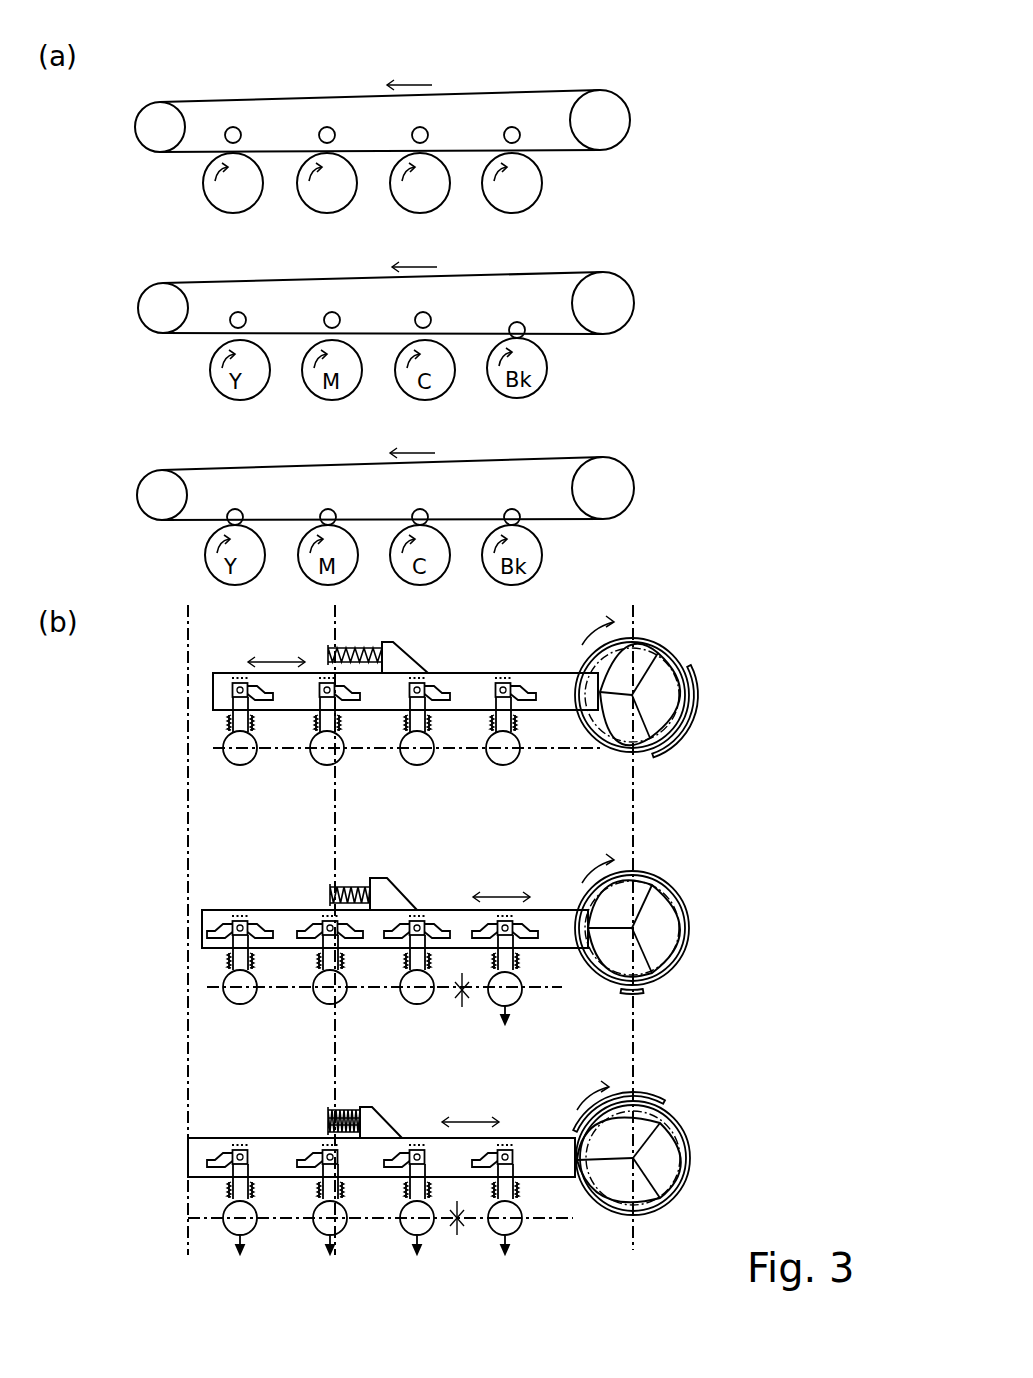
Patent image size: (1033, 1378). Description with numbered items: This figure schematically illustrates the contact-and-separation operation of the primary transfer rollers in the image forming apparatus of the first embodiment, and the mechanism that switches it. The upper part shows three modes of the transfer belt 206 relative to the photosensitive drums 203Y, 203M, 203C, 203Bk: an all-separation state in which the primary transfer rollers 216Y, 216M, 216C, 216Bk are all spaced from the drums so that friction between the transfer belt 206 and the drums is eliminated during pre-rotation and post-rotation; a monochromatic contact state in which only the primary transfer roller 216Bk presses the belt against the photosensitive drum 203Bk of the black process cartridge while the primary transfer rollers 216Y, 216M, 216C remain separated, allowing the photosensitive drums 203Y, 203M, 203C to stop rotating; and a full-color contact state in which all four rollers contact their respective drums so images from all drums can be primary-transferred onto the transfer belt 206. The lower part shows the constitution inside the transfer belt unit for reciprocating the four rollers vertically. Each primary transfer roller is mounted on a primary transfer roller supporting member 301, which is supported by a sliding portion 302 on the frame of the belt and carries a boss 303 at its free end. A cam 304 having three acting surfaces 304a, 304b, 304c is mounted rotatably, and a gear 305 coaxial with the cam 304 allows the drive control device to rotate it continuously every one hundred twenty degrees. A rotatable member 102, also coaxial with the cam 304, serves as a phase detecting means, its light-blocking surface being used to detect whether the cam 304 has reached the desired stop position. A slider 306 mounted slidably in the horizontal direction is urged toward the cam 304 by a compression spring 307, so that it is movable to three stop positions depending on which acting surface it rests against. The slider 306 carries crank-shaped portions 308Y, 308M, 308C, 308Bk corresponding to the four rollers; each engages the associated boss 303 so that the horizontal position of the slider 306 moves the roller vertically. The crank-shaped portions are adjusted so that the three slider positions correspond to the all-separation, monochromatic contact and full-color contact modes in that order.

The transfer belt 206 is at (628, 102).
The primary transfer roller 216Y is at (242, 130).
The primary transfer roller 216M is at (335, 130).
The primary transfer roller 216C is at (428, 130).
The primary transfer roller 216Bk is at (520, 130).
The photosensitive drum 203Y is at (248, 212).
The photosensitive drum 203M is at (347, 205).
The photosensitive drum 203C is at (440, 208).
The photosensitive drum 203Bk is at (537, 200).
The primary transfer roller supporting member 301 is at (228, 758).
The sliding portion 302 is at (230, 718).
The boss 303 is at (230, 695).
The cam 304 is at (650, 700).
The acting surface 304a is at (620, 748).
The acting surface 304b is at (667, 747).
The acting surface 304c is at (660, 652).
The gear 305 is at (692, 725).
The slider 306 is at (393, 657).
The compression spring 307 is at (347, 650).
The crank-shaped portion 308Y is at (244, 683).
The crank-shaped portion 308M is at (333, 683).
The crank-shaped portion 308C is at (437, 693).
The crank-shaped portion 308Bk is at (530, 688).
The rotatable member 102 is at (675, 742).